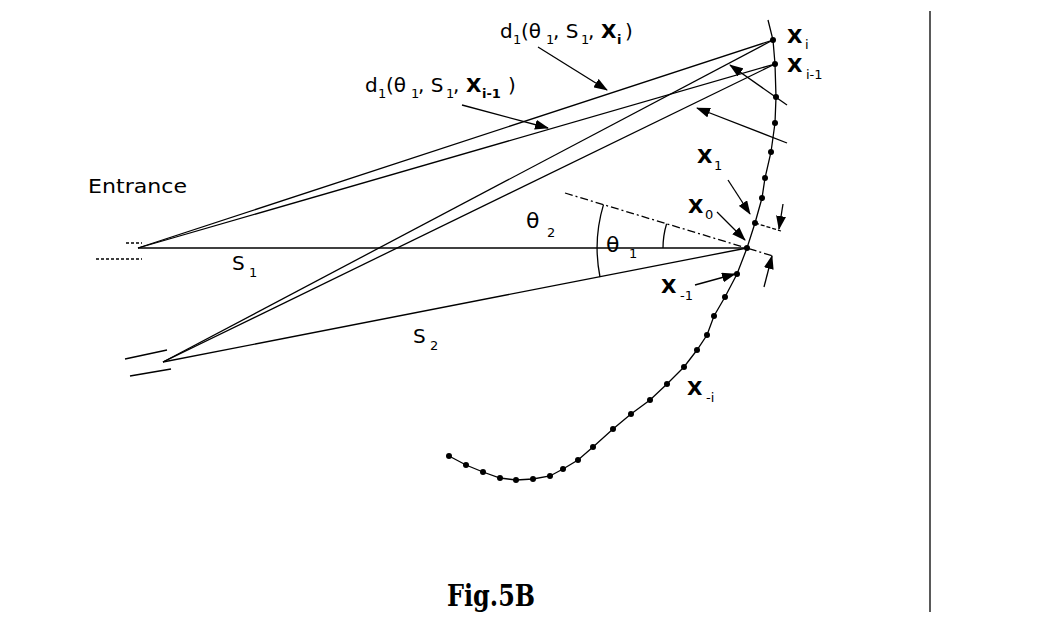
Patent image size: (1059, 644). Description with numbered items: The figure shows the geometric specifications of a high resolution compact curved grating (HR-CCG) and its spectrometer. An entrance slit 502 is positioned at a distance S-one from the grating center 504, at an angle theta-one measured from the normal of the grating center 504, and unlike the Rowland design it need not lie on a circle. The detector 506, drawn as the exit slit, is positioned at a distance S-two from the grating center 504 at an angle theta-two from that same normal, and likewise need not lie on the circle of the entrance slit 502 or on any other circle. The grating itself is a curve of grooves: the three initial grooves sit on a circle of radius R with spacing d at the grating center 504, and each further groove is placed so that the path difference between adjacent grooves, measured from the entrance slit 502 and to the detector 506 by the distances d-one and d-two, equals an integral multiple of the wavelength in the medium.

The entrance slit 502 is at (82, 243).
The grating center 504 is at (780, 226).
The detector 506 is at (110, 368).